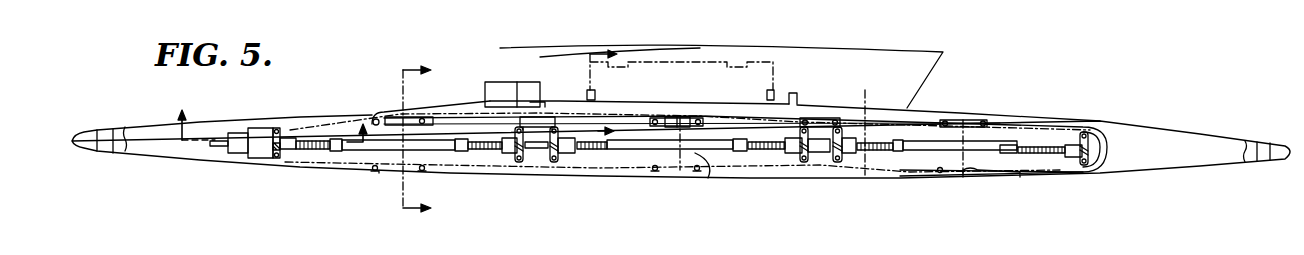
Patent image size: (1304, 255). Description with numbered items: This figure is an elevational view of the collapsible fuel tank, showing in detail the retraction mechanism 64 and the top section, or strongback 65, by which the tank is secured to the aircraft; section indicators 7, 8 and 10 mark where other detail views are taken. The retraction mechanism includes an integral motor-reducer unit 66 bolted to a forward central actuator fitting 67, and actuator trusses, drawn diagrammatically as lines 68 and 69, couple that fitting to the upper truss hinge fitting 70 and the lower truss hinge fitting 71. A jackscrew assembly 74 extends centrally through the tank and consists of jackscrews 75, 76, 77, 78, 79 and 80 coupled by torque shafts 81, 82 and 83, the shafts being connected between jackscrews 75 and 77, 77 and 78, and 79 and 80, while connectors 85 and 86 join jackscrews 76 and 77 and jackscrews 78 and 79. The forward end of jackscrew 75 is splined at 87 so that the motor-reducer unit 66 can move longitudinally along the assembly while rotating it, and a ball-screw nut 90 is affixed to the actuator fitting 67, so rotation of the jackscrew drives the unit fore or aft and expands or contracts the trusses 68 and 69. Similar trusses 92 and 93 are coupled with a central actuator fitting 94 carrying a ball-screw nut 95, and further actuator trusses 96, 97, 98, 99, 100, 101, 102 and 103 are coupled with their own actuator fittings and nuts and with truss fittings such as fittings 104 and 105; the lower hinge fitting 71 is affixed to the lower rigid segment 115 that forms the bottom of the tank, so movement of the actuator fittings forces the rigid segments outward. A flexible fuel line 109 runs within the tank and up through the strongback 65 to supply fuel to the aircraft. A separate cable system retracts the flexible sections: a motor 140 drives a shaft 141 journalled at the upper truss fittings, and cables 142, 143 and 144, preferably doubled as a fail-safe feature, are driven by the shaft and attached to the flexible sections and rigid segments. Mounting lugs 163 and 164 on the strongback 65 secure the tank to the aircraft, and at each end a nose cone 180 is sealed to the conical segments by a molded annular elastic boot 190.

The section line 7- 7 is at (270, 136).
The section line 8- 8 is at (430, 147).
The drive unit 10 is at (681, 99).
The retraction mechanism 64 is at (266, 167).
The strongback 65 is at (918, 105).
The integral motor-reducer unit 66 is at (266, 121).
The forward central actuator fitting 67 is at (279, 128).
The actuator truss 68 is at (341, 120).
The actuator truss 69 is at (322, 165).
The upper truss hinge fitting 70 is at (373, 113).
The lower truss hinge fitting 71 is at (395, 150).
The jackscrew assembly 74 is at (487, 152).
The jackscrew 75 is at (300, 152).
The jackscrew 76 is at (501, 153).
The jackscrew 77 is at (577, 164).
The jackscrew 78 is at (773, 153).
The jackscrew 79 is at (873, 160).
The jackscrew 80 is at (1050, 154).
The torque shaft 81 is at (358, 153).
The torque shaft 82 is at (645, 149).
The torque shaft 83 is at (937, 153).
The connector 85 is at (542, 167).
The connector 86 is at (830, 153).
The spline 87 is at (217, 147).
The ball-screw nut 90 is at (278, 158).
The actuator truss 92 is at (466, 105).
The actuator truss 93 is at (433, 157).
The central actuator fitting 94 is at (531, 164).
The ball-screw nut 95 is at (517, 161).
The actuator truss 96 is at (553, 117).
The actuator truss 97 is at (597, 164).
The actuator truss 98 is at (790, 104).
The actuator truss 99 is at (783, 161).
The actuator truss 100 is at (867, 120).
The actuator truss 101 is at (900, 173).
The actuator truss 102 is at (1030, 127).
The actuator truss 103 is at (1060, 168).
The truss fitting 104 is at (658, 118).
The truss fitting 105 is at (656, 176).
The flexible fuel line 109 is at (1108, 144).
The lower rigid segment 115 is at (567, 158).
The motor 140 is at (503, 86).
The shaft 141 is at (620, 120).
The cable 142 is at (396, 163).
The cable 143 is at (706, 172).
The cable 144 is at (955, 178).
The mounting lug 163 is at (590, 116).
The mounting lug 164 is at (768, 95).
The nose cone 180 is at (90, 157).
The molded annular elastic boot 190 is at (112, 133).